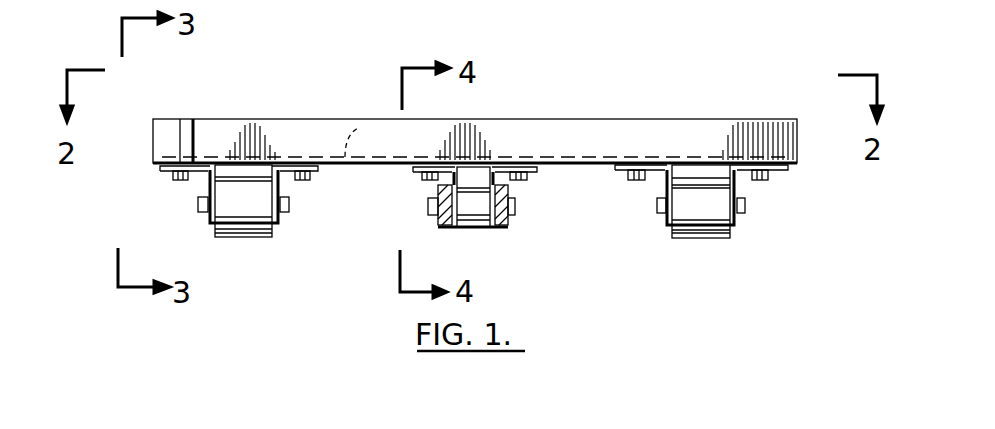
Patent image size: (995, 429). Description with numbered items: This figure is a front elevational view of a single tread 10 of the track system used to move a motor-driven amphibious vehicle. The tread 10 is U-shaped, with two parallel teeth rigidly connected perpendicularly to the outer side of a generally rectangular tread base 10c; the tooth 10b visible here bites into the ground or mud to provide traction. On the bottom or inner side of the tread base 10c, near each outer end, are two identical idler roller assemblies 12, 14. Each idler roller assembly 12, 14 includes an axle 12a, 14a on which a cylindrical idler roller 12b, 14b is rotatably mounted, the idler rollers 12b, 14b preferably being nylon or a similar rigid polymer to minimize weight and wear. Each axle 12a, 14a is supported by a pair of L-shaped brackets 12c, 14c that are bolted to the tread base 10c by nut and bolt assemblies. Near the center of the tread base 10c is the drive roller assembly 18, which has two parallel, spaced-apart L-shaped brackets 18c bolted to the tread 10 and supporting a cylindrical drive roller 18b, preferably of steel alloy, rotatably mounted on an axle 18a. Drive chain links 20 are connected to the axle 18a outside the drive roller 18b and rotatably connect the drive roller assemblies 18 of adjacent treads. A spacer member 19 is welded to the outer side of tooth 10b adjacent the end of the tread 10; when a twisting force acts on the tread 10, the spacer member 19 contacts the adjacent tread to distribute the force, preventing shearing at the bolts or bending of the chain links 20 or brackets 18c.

The tread 10 is at (538, 112).
The tooth 10b is at (700, 130).
The tread base 10c is at (369, 140).
The idler roller assembly 12 is at (716, 230).
The axle 12a is at (658, 208).
The idler roller 12b is at (695, 238).
The L-shaped bracket 12c is at (657, 192).
The idler roller assembly 14 is at (240, 231).
The axle 14a is at (287, 208).
The idler roller 14b is at (250, 236).
The L-shaped bracket 14c is at (205, 185).
The drive roller assembly 18 is at (480, 228).
The axle 18a is at (512, 205).
The drive roller 18b is at (472, 229).
The L-shaped bracket 18c is at (413, 170).
The spacer member 19 is at (194, 132).
The drive chain link 20 is at (440, 230).